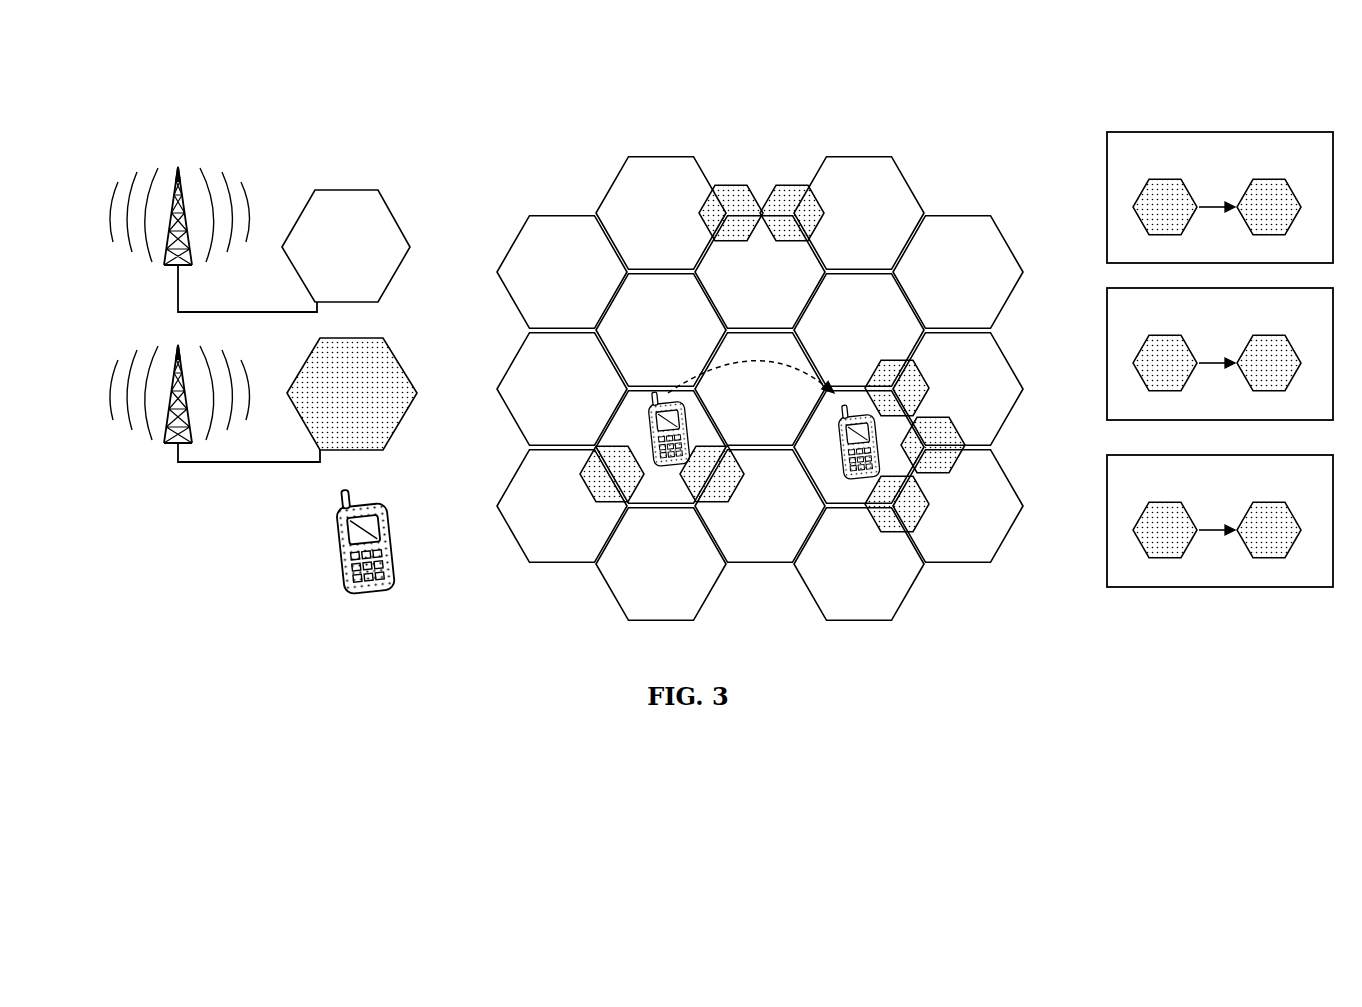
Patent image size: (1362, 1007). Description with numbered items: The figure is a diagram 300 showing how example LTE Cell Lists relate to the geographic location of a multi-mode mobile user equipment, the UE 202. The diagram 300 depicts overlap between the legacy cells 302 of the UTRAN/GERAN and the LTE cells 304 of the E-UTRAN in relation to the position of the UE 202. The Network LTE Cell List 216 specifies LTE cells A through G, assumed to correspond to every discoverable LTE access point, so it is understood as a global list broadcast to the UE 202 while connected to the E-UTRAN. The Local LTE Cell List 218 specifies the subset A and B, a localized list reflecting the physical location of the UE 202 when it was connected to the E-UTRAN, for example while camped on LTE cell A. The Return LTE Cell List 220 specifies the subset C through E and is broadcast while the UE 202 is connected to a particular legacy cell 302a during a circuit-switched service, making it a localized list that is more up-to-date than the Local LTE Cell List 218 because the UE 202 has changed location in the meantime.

The diagram 300 is at (760, 329).
The legacy cells 302 is at (400, 230).
The LTE cells 304 is at (404, 376).
The UE 202 is at (383, 530).
The legacy cell 302a is at (835, 487).
The Network LTE Cell List 216 is at (1206, 171).
The Local LTE Cell List 218 is at (1206, 328).
The Return LTE Cell List 220 is at (1206, 495).